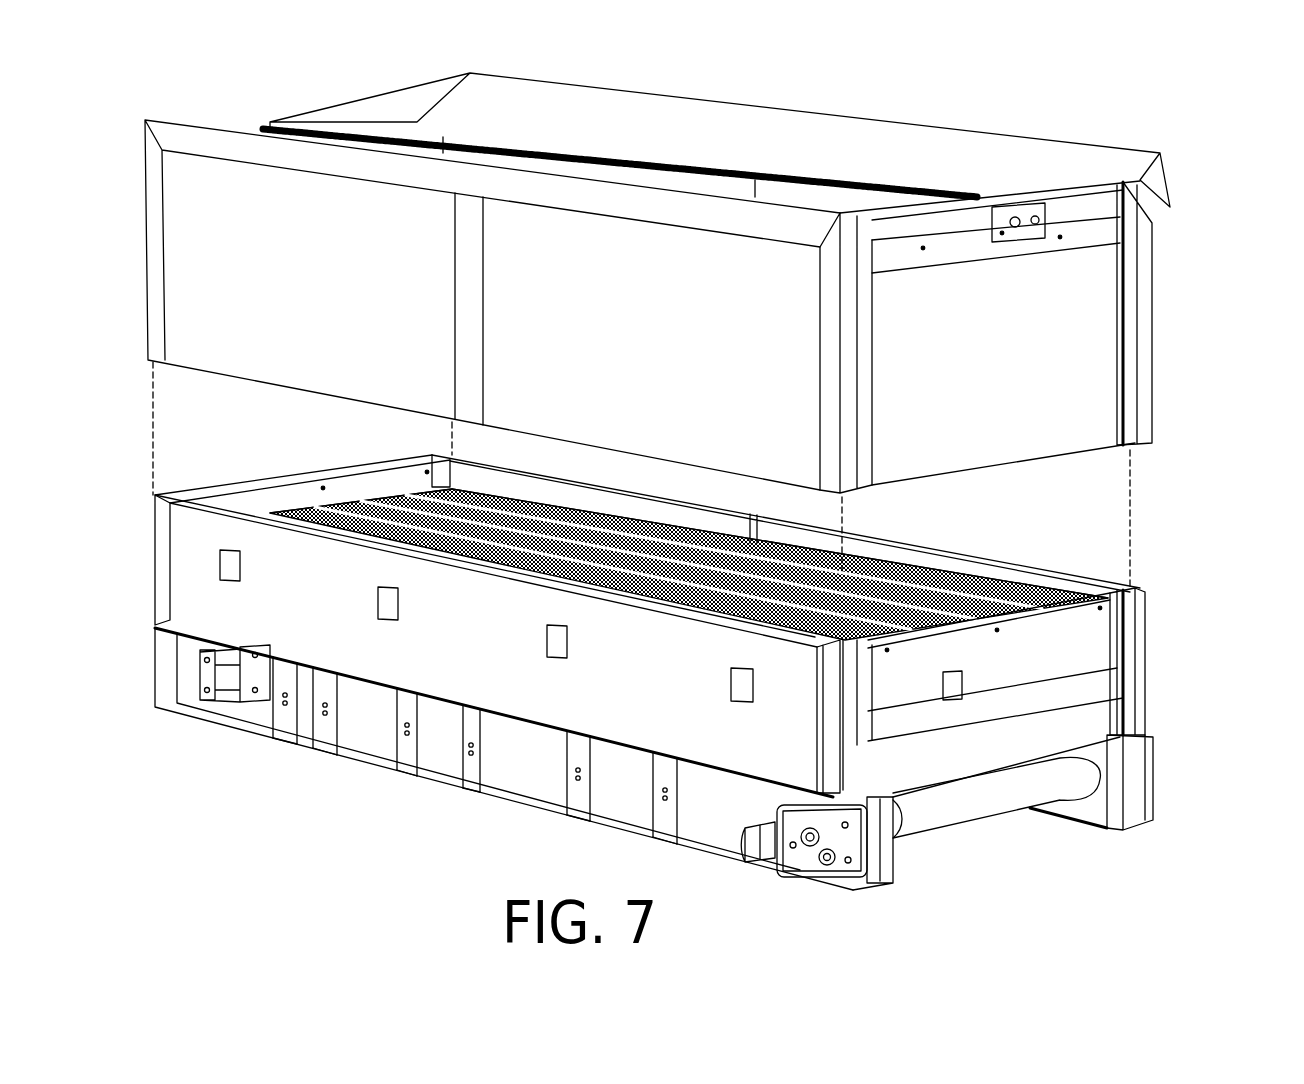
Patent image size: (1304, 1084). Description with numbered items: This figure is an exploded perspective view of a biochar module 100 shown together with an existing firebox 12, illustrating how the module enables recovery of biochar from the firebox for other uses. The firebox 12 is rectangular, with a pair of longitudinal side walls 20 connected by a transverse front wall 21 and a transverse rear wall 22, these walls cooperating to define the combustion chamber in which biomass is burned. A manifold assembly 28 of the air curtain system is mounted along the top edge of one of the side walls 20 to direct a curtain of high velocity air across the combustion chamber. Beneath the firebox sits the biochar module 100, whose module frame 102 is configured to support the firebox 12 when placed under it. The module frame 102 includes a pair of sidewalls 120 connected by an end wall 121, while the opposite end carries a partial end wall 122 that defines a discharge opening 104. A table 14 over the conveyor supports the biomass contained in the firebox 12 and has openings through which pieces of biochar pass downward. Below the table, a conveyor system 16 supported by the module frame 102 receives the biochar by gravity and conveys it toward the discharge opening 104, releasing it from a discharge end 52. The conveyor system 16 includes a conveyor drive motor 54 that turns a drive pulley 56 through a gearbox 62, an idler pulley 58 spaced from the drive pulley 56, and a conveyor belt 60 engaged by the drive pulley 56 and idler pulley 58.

The firebox 12 is at (705, 321).
The table 14 is at (588, 510).
The conveyor system 16 is at (657, 768).
The longitudinal side walls 20 is at (663, 177).
The transverse front wall 21 is at (423, 130).
The transverse rear wall 22 is at (1006, 362).
The manifold assembly 28 is at (785, 123).
The discharge end 52 is at (1031, 775).
The conveyor drive motor 54 is at (747, 837).
The drive pulley 56 is at (867, 867).
The idler pulley 58 is at (203, 665).
The conveyor belt 60 is at (937, 787).
The gearbox 62 is at (800, 873).
The biochar module 100 is at (596, 613).
The module frame 102 is at (158, 560).
The discharge opening 104 is at (1037, 815).
The sidewalls 120 is at (867, 535).
The end wall 121 is at (312, 472).
The partial end wall 122 is at (1044, 668).